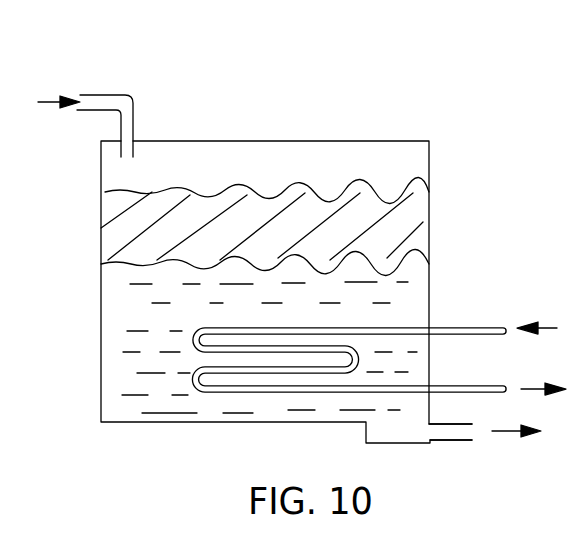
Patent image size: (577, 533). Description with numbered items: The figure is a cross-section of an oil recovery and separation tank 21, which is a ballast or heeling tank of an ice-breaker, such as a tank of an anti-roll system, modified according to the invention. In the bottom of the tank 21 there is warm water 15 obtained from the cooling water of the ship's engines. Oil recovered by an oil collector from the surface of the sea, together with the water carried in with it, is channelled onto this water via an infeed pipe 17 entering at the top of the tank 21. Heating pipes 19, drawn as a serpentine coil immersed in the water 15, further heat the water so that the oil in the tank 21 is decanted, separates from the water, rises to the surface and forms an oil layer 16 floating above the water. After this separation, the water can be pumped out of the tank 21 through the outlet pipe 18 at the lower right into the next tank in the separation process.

The warm water 15 is at (113, 322).
The oil layer 16 is at (108, 237).
The infeed pipe 17 is at (102, 98).
The outlet pipe 18 is at (452, 433).
The heating pipes 19 is at (387, 325).
The oil recovery and separation tank 21 is at (380, 118).